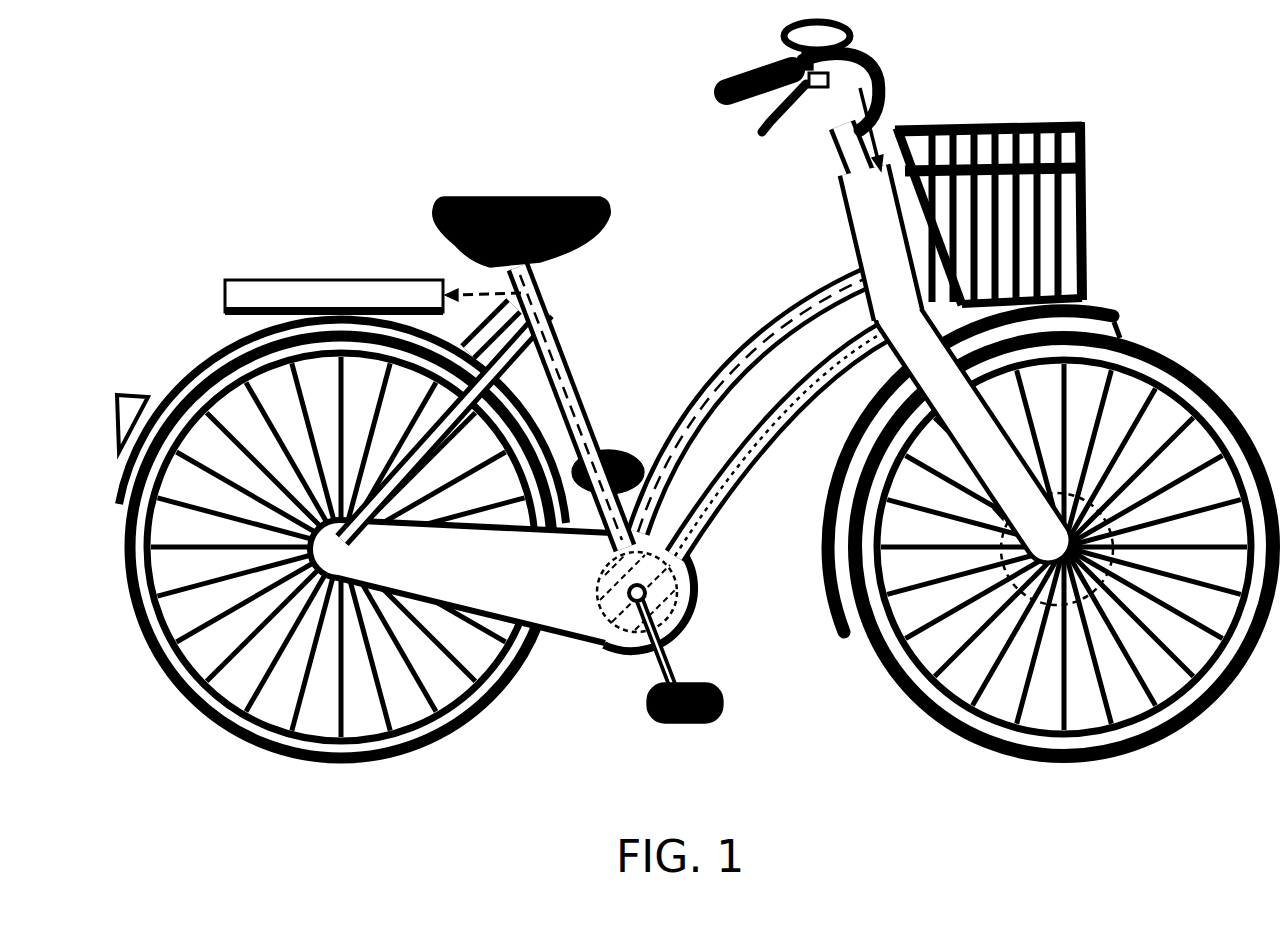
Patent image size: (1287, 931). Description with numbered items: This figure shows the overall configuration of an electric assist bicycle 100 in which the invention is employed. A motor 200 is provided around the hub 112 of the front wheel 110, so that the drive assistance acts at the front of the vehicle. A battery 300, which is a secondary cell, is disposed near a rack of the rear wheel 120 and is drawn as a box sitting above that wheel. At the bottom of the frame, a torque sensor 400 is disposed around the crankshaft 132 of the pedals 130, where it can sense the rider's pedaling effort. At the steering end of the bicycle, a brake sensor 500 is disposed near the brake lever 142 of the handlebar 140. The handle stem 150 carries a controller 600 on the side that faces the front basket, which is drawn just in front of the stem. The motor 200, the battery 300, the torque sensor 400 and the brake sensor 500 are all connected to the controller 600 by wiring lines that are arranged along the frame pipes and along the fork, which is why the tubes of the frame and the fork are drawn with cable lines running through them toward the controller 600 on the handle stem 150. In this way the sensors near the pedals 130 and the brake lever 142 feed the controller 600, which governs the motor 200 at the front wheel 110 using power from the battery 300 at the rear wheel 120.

The electric assist bicycle 100 is at (413, 106).
The front wheel 110 is at (925, 727).
The hub 112 is at (1065, 560).
The rear wheel 120 is at (470, 730).
The pedals 130 is at (664, 728).
The crankshaft 132 is at (630, 603).
The handlebar 140 is at (730, 70).
The brake lever 142 is at (760, 128).
The handle stem 150 is at (856, 220).
The motor 200 is at (1027, 565).
The battery 300 is at (328, 278).
The torque sensor 400 is at (675, 612).
The brake sensor 500 is at (818, 90).
The controller 600 is at (887, 167).